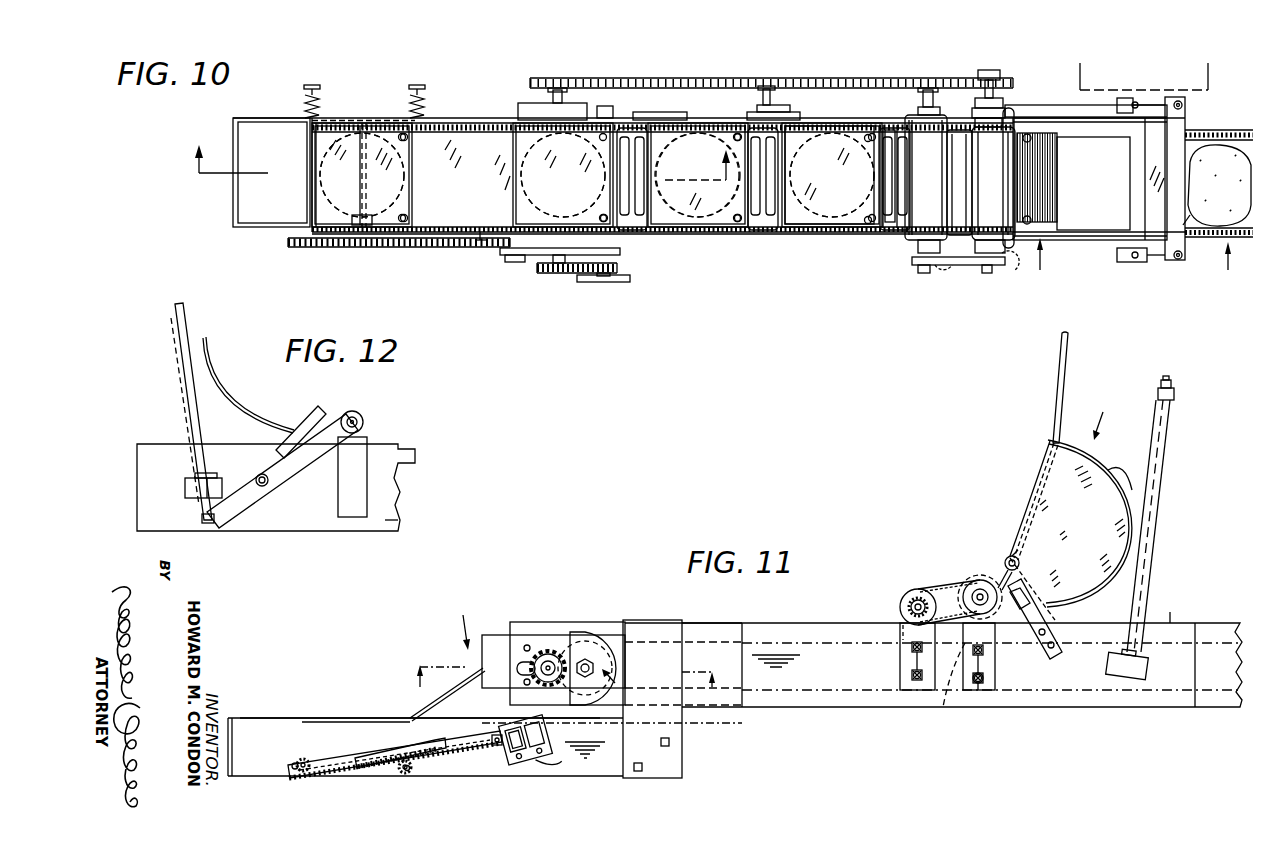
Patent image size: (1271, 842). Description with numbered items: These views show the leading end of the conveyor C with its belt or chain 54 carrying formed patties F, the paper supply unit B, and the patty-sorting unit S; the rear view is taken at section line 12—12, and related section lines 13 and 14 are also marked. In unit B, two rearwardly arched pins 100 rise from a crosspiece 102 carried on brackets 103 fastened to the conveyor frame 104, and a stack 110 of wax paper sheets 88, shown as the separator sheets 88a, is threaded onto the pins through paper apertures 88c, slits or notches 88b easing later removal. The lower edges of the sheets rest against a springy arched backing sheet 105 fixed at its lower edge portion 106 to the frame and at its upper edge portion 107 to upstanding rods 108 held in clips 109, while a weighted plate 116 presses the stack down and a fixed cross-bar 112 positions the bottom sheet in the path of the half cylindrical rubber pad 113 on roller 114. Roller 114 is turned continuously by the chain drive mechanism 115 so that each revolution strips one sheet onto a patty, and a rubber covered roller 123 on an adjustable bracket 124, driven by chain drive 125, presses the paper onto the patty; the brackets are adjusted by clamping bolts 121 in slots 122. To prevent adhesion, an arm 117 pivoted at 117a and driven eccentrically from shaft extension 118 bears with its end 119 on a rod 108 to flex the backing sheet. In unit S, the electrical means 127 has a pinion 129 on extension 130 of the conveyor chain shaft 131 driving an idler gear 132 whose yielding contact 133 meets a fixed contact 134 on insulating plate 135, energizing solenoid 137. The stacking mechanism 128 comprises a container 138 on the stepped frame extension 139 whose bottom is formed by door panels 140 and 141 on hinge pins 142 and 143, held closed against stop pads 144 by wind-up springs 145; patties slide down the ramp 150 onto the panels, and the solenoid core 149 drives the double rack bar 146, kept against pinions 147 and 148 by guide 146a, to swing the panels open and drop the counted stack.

In FIG. 10, the section line 12— 12 is at (1158, 72).
In FIG. 10, the section line 13- 13 is at (456, 150).
In FIG. 11, the section line 14- 14 is at (552, 667).
In FIG. 10, the conveyor belt 54 is at (724, 236).
In FIG. 10, the carrier 88 is at (1205, 131).
In FIG. 10, the wax sheets 88a is at (828, 222).
In FIG. 11, the wax sheets 88a is at (1040, 512).
In FIG. 10, the slits or notches 88b is at (408, 219).
In FIG. 10, the paper apertures 88c is at (408, 138).
In FIG. 10, the pins 100 is at (1032, 137).
In FIG. 11, the pins 100 is at (1068, 365).
In FIG. 11, the crosspiece 102 is at (1008, 556).
In FIG. 10, the brackets 103 is at (1008, 108).
In FIG. 11, the brackets 103 is at (1003, 680).
In FIG. 12, the conveyor frame 104 is at (345, 532).
In FIG. 11, the conveyor frame 104 is at (1038, 708).
In FIG. 10, the backing sheet 105 is at (1158, 205).
In FIG. 12, the backing sheet 105 is at (233, 380).
In FIG. 11, the backing sheet 105 is at (1090, 572).
In FIG. 11, the lower edge portion 106 is at (943, 708).
In FIG. 10, the upper edge portion 107 is at (1183, 220).
In FIG. 11, the upper edge portion 107 is at (1163, 378).
In FIG. 10, the upstanding rods 108 is at (1165, 97).
In FIG. 12, the upstanding rods 108 is at (178, 372).
In FIG. 11, the upstanding rods 108 is at (1150, 560).
In FIG. 10, the clips 109 is at (1124, 98).
In FIG. 12, the clips 109 is at (185, 492).
In FIG. 11, the clips 109 is at (1147, 678).
In FIG. 10, the stack 110 is at (1050, 206).
In FIG. 11, the stack 110 is at (1040, 488).
In FIG. 11, the fixed cross-bar 112 is at (1000, 578).
In FIG. 10, the half cylindrical rubber pad 113 is at (986, 240).
In FIG. 11, the half cylindrical rubber pad 113 is at (1008, 640).
In FIG. 10, the roller 114 is at (972, 228).
In FIG. 11, the roller 114 is at (960, 585).
In FIG. 10, the chain drive mechanism 115 is at (768, 78).
In FIG. 10, the weighted plate 116 is at (1108, 222).
In FIG. 11, the weighted plate 116 is at (1100, 470).
In FIG. 10, the arm 117 is at (1045, 105).
In FIG. 12, the arm 117 is at (295, 470).
In FIG. 12, the pivot 117a is at (264, 487).
In FIG. 10, the shaft extension 118 is at (987, 70).
In FIG. 12, the shaft extension 118 is at (358, 422).
In FIG. 12, the end of arm 119 is at (210, 524).
In FIG. 11, the clamping bolts or screws 121 is at (980, 690).
In FIG. 11, the slots 122 is at (976, 684).
In FIG. 10, the rubber covered roller 123 is at (912, 135).
In FIG. 11, the rubber covered roller 123 is at (900, 604).
In FIG. 11, the bracket 124 is at (903, 690).
In FIG. 10, the chain drive 125 is at (936, 273).
In FIG. 11, the chain drive 125 is at (962, 595).
In FIG. 11, the electrical means 127 is at (586, 620).
In FIG. 10, the stacking mechanism 128 is at (352, 116).
In FIG. 11, the stacking mechanism 128 is at (367, 668).
In FIG. 10, the pinion 129 is at (546, 276).
In FIG. 11, the pinion 129 is at (542, 650).
In FIG. 10, the outward extension 130 is at (553, 273).
In FIG. 10, the conveyor chain shaft 131 is at (516, 262).
In FIG. 11, the idler gear 132 is at (556, 650).
In FIG. 10, the yielding contact 133 is at (610, 255).
In FIG. 11, the yielding contact 133 is at (603, 648).
In FIG. 10, the fixed contact 134 is at (610, 283).
In FIG. 11, the fixed contact 134 is at (628, 668).
In FIG. 10, the plate 135 is at (590, 283).
In FIG. 11, the solenoid 137 is at (505, 760).
In FIG. 10, the container 138 is at (312, 200).
In FIG. 10, the frame extension 139 is at (297, 118).
In FIG. 11, the frame extension 139 is at (272, 718).
In FIG. 10, the door panel 140 is at (372, 226).
In FIG. 10, the door panel 141 is at (352, 225).
In FIG. 11, the hinge pin 142 is at (402, 772).
In FIG. 11, the hinge pin 143 is at (306, 760).
In FIG. 10, the stop pads 144 is at (395, 118).
In FIG. 10, the wind-up springs 145 is at (313, 86).
In FIG. 11, the double rack bar 146 is at (356, 770).
In FIG. 11, the guide 146a is at (385, 750).
In FIG. 11, the pinion 147 is at (409, 772).
In FIG. 11, the pinion 148 is at (293, 766).
In FIG. 11, the movable core 149 is at (495, 746).
In FIG. 10, the inclined ramp or guide means 150 is at (481, 240).
In FIG. 11, the inclined ramp or guide means 150 is at (448, 692).
In FIG. 10, the paper supply unit B is at (1035, 262).
In FIG. 12, the paper supply unit B is at (287, 424).
In FIG. 11, the paper supply unit B is at (1100, 416).
In FIG. 10, the conveyor C is at (1231, 264).
In FIG. 11, the conveyor C is at (1172, 620).
In FIG. 10, the patties F is at (384, 150).
In FIG. 10, the patty-sorting unit S is at (376, 248).
In FIG. 11, the patty-sorting unit S is at (464, 621).